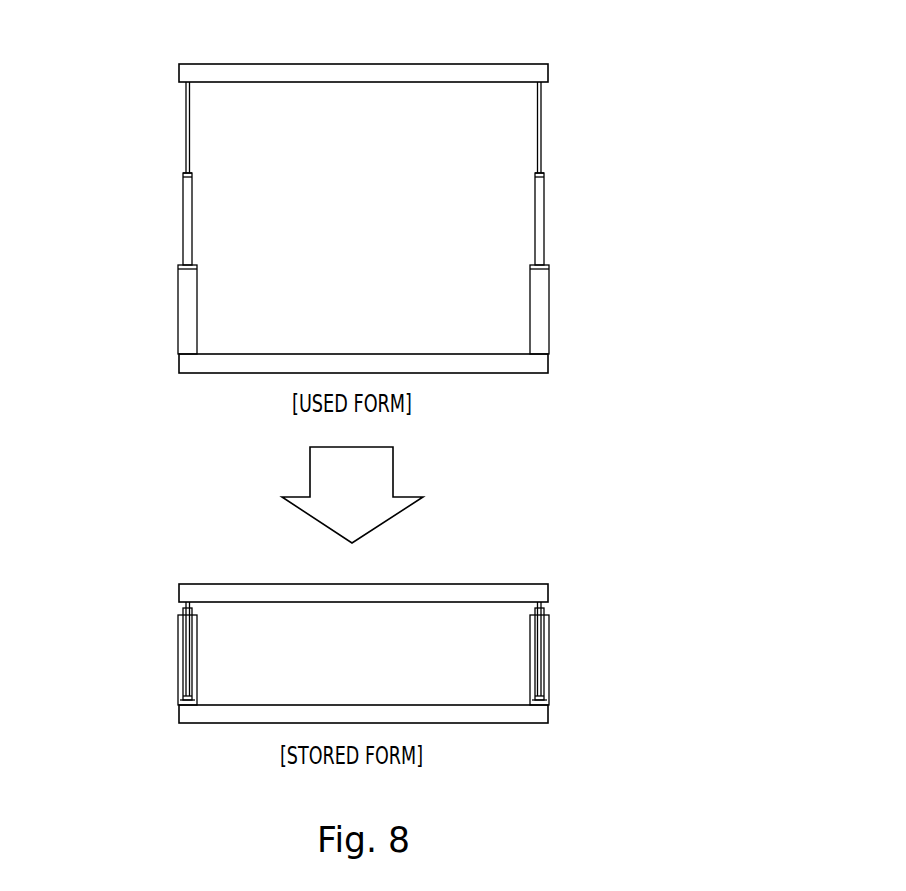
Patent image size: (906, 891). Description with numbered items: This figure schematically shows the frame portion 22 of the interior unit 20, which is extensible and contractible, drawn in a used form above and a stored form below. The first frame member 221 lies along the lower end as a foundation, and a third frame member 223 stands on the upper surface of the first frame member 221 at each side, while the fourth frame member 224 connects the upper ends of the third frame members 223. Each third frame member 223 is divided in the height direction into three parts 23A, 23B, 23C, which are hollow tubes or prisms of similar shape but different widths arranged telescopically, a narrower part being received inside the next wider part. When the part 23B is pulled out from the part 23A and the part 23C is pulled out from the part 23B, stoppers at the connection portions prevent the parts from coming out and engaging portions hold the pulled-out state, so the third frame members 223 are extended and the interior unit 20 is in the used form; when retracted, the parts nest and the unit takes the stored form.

The interior unit 20 is at (668, 85).
The frame portion 22 is at (671, 168).
The first frame member 221 is at (502, 373).
The third frame member 223 is at (362, 393).
The fourth frame member 224 is at (467, 73).
The part 23A is at (362, 485).
The part 23B is at (183, 215).
The part 23C is at (183, 122).